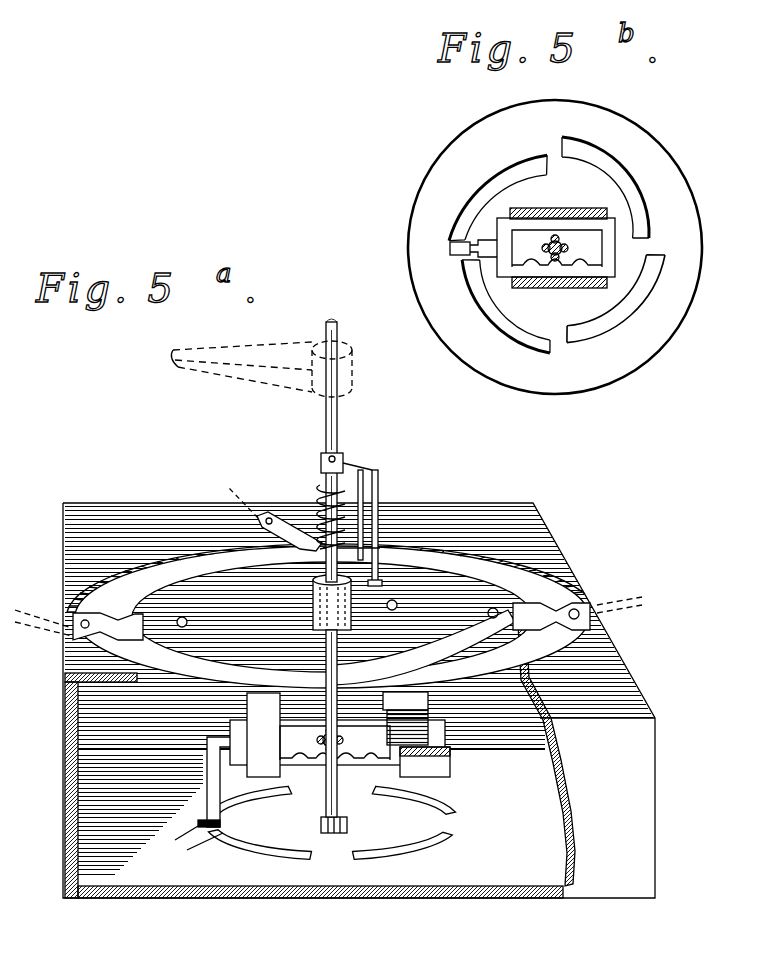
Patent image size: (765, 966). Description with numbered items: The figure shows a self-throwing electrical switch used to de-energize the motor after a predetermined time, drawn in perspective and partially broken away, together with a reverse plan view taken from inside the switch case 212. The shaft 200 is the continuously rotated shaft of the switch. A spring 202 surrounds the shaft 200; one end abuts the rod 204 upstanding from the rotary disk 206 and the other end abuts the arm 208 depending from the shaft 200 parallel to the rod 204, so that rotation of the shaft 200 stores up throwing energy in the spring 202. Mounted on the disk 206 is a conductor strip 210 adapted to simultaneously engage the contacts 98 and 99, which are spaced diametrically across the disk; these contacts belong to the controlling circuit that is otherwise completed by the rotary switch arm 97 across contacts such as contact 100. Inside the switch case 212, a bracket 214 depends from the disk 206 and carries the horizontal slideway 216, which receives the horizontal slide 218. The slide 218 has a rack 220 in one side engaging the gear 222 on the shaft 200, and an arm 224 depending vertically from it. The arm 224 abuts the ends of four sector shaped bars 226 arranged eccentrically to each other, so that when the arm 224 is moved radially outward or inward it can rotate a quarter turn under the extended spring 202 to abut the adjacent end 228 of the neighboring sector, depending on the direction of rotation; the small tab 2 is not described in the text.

In FIG. 5B, the tab 2 is at (449, 252).
In FIG. 5A, the rotary switch arm 97 is at (258, 372).
In FIG. 5A, the contact 98 is at (72, 642).
In FIG. 5A, the contact 99 is at (548, 615).
In FIG. 5A, the contact 100 is at (290, 517).
In FIG. 5A, the shaft 200 is at (326, 399).
In FIG. 5A, the spring 202 is at (345, 468).
In FIG. 5A, the rod 204 is at (380, 530).
In FIG. 5A, the rotary disk 206 is at (222, 671).
In FIG. 5A, the arm 208 is at (352, 522).
In FIG. 5A, the conductor strip 210 is at (447, 640).
In FIG. 5A, the switch case 212 is at (650, 735).
In FIG. 5B, the bracket 214 is at (541, 209).
In FIG. 5A, the bracket 214 is at (427, 695).
In FIG. 5B, the horizontal slideway 216 is at (582, 201).
In FIG. 5A, the horizontal slideway 216 is at (447, 747).
In FIG. 5B, the horizontal slide 218 is at (508, 273).
In FIG. 5A, the horizontal slide 218 is at (366, 754).
In FIG. 5B, the rack 220 is at (566, 246).
In FIG. 5A, the rack 220 is at (341, 748).
In FIG. 5B, the gear 222 is at (541, 247).
In FIG. 5A, the gear 222 is at (313, 740).
In FIG. 5A, the arm 224 is at (212, 772).
In FIG. 5B, the sector shaped bars 226 is at (612, 320).
In FIG. 5A, the sector shaped bars 226 is at (257, 812).
In FIG. 5B, the end 228 is at (563, 343).
In FIG. 5A, the end 228 is at (342, 854).